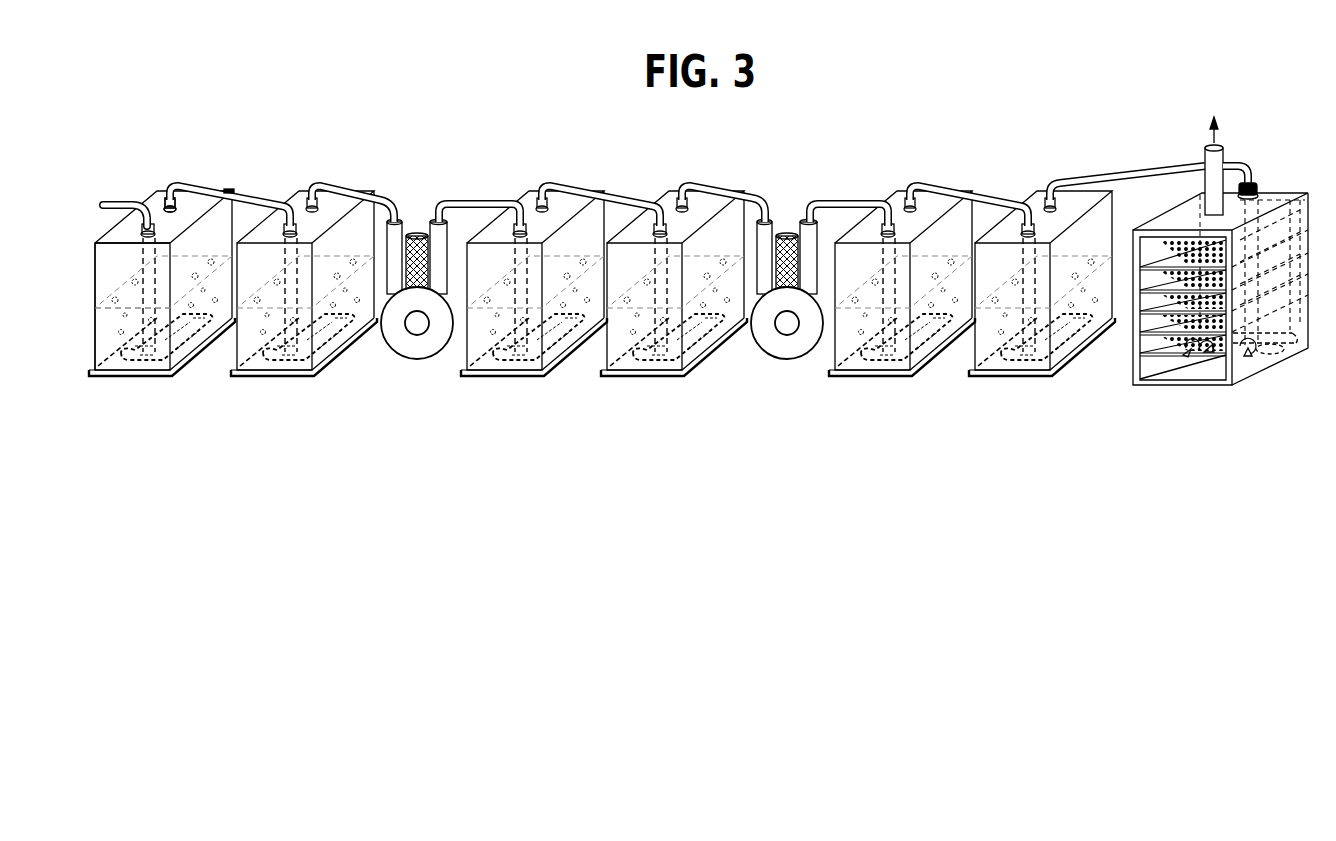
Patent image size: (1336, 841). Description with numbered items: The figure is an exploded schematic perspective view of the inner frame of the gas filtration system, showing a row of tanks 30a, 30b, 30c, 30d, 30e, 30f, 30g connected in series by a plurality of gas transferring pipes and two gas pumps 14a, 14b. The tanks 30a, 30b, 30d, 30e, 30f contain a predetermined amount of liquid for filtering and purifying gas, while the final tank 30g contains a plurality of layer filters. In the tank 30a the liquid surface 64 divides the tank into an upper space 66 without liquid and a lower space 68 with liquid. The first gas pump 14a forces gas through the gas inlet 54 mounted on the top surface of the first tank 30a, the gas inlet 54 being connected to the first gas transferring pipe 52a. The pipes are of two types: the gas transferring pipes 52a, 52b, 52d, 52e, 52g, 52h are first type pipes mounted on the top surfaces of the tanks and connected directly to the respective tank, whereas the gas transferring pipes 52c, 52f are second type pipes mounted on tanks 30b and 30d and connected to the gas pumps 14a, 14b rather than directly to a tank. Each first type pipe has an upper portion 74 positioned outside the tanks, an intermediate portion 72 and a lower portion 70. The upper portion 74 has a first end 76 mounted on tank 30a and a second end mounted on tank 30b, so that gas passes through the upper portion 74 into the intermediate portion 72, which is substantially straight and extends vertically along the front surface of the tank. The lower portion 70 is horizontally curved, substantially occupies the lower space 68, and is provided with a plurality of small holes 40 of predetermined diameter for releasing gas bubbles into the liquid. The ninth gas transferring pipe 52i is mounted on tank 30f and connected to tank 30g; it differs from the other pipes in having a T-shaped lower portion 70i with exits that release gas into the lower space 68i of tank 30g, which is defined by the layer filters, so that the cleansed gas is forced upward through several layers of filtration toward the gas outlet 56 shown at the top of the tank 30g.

The first tank 30a is at (147, 301).
The tank 30b is at (304, 296).
The tank 30c is at (534, 333).
The tank 30d is at (674, 333).
The tank 30e is at (902, 333).
The tank 30f is at (1010, 410).
The tank 30g is at (1221, 283).
The first gas pump 14a is at (416, 360).
The gas pump 14b is at (787, 360).
The gas inlet 54 is at (105, 200).
The exhaust vent 56 is at (1220, 160).
The liquid surface 64 is at (90, 267).
The upper space 66 is at (93, 256).
The lower space 68 is at (107, 318).
The lower space 68i is at (1163, 376).
The lower portion 70 is at (297, 357).
The T-shaped lower portion 70i is at (1290, 347).
The intermediate portion 72 is at (291, 252).
The upper portion 74 is at (243, 194).
The first end 76 is at (170, 195).
The holes 40 is at (660, 358).
The first gas transferring pipe 52a is at (146, 358).
The gas transferring pipe 52b is at (200, 186).
The gas transferring pipe 52c is at (376, 195).
The gas transferring pipe 52d is at (521, 358).
The gas transferring pipe 52e is at (606, 195).
The gas transferring pipe 52f is at (750, 195).
The gas transferring pipe 52g is at (896, 358).
The gas transferring pipe 52h is at (986, 195).
The ninth gas transferring pipe 52i is at (1120, 174).